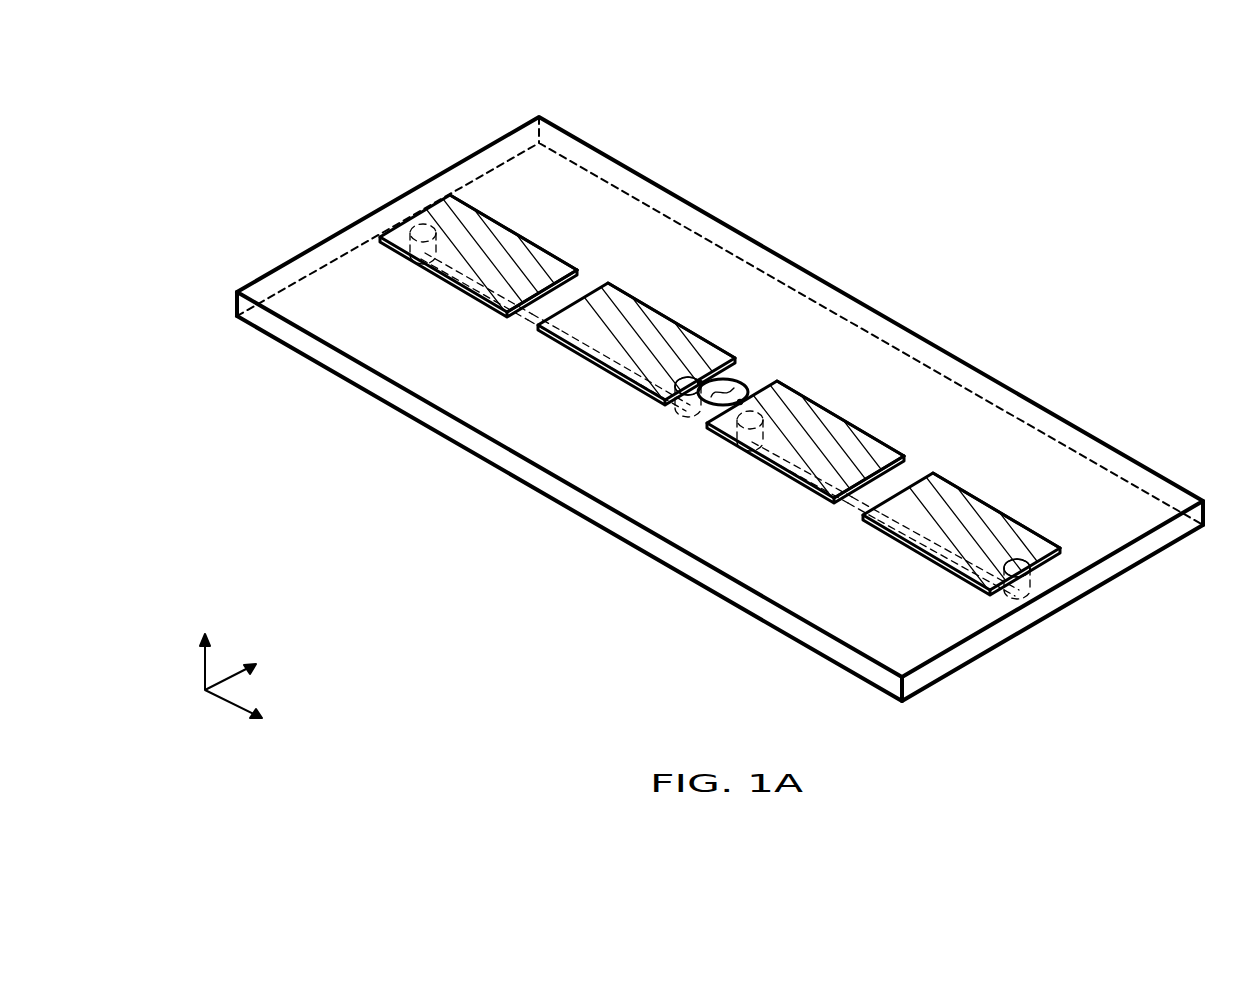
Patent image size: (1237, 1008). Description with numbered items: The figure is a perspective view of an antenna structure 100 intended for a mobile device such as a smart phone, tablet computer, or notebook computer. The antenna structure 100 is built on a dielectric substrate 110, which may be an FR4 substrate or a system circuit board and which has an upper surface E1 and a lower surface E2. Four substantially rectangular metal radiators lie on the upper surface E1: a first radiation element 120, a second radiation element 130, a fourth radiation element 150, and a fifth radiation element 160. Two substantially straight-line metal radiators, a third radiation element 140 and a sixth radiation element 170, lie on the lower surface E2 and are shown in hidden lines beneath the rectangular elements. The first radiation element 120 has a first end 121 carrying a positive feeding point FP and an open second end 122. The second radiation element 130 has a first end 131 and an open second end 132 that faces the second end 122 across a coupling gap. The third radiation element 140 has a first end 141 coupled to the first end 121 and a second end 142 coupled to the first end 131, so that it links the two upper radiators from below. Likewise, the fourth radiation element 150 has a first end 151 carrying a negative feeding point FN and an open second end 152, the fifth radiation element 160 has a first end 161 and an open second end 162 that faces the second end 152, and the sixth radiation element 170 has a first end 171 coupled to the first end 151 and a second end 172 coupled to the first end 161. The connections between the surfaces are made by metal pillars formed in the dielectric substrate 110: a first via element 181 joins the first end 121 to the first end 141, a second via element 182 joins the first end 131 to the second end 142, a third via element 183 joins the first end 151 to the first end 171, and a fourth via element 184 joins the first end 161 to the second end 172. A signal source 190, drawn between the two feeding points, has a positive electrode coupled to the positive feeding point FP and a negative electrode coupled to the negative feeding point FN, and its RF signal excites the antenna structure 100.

The antenna structure 100 is at (180, 93).
The dielectric substrate 110 is at (237, 305).
The upper surface E1 is at (267, 287).
The lower surface E2 is at (263, 333).
The first radiation element 120 is at (662, 318).
The first end of first radiation element 121 is at (690, 377).
The second end of first radiation element 122 is at (619, 296).
The second radiation element 130 is at (497, 240).
The first end of second radiation element 131 is at (456, 202).
The second end of second radiation element 132 is at (540, 280).
The third radiation element 140 is at (515, 327).
The first end of third radiation element 141 is at (672, 432).
The second end of third radiation element 142 is at (398, 260).
The fourth radiation element 150 is at (823, 427).
The first end of fourth radiation element 151 is at (790, 393).
The second end of fourth radiation element 152 is at (865, 475).
The fifth radiation element 160 is at (973, 527).
The first end of fifth radiation element 161 is at (1017, 567).
The second end of fifth radiation element 162 is at (940, 484).
The sixth radiation element 170 is at (862, 528).
The first end of sixth radiation element 171 is at (727, 447).
The second end of sixth radiation element 172 is at (1003, 604).
The first via element 181 is at (688, 413).
The second via element 182 is at (422, 222).
The third via element 183 is at (748, 440).
The fourth via element 184 is at (1031, 594).
The signal source 190 is at (757, 377).
The positive feeding point FP is at (718, 362).
The negative feeding point FN is at (718, 416).